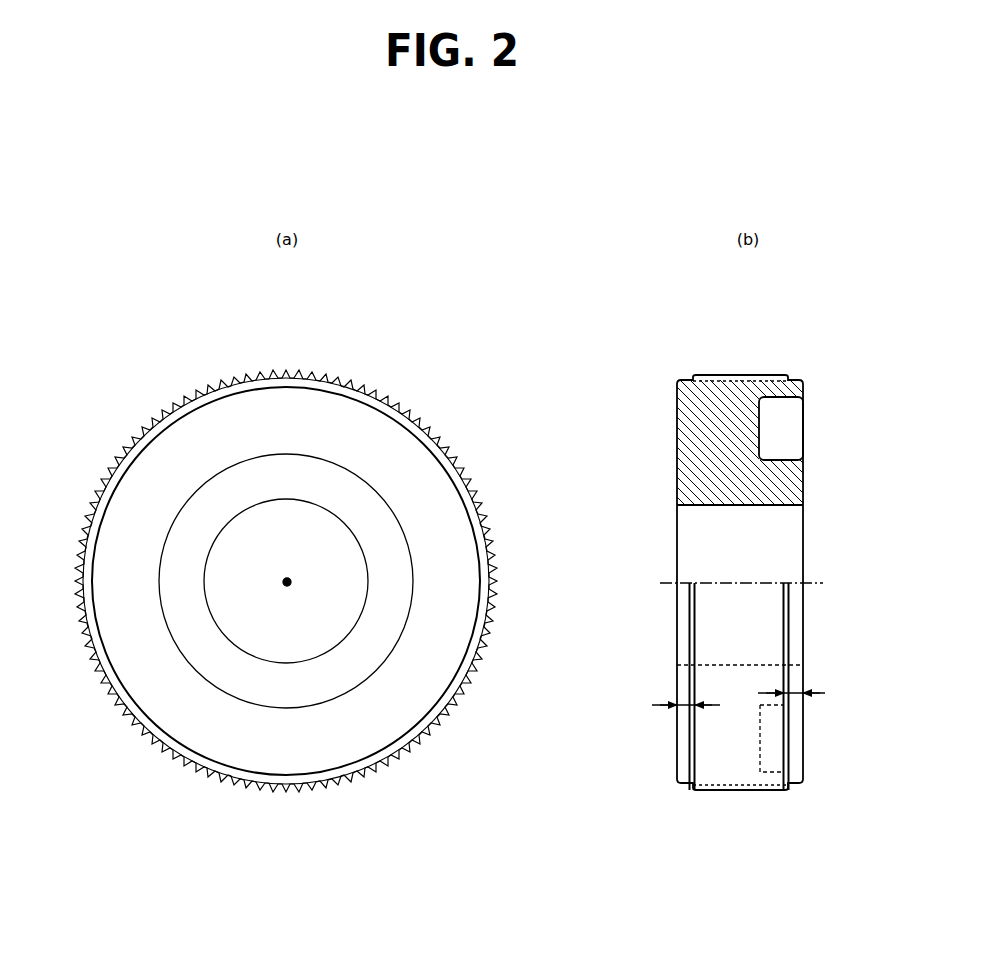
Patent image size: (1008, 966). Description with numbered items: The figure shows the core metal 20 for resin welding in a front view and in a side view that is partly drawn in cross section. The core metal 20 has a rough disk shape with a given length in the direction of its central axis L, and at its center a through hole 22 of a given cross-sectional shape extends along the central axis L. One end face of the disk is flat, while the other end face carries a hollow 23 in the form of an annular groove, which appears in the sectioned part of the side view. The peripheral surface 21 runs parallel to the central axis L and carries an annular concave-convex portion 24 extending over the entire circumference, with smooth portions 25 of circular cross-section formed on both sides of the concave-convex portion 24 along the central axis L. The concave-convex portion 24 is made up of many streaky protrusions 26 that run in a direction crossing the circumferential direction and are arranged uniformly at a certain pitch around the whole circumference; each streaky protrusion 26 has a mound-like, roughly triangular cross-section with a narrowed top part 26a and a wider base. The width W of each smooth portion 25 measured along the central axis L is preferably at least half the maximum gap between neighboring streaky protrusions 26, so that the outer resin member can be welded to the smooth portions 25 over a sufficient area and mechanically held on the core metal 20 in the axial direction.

The core metal 20 is at (476, 715).
The peripheral surface 21 is at (343, 787).
The through hole 22 is at (288, 658).
The hollow 23 is at (226, 762).
The concave-convex portion 24 is at (200, 774).
The smooth portions 25 is at (172, 758).
The streaky protrusions 26 is at (437, 437).
The narrowed top part 26a is at (484, 512).
The central axis L is at (293, 577).
The width W is at (738, 687).